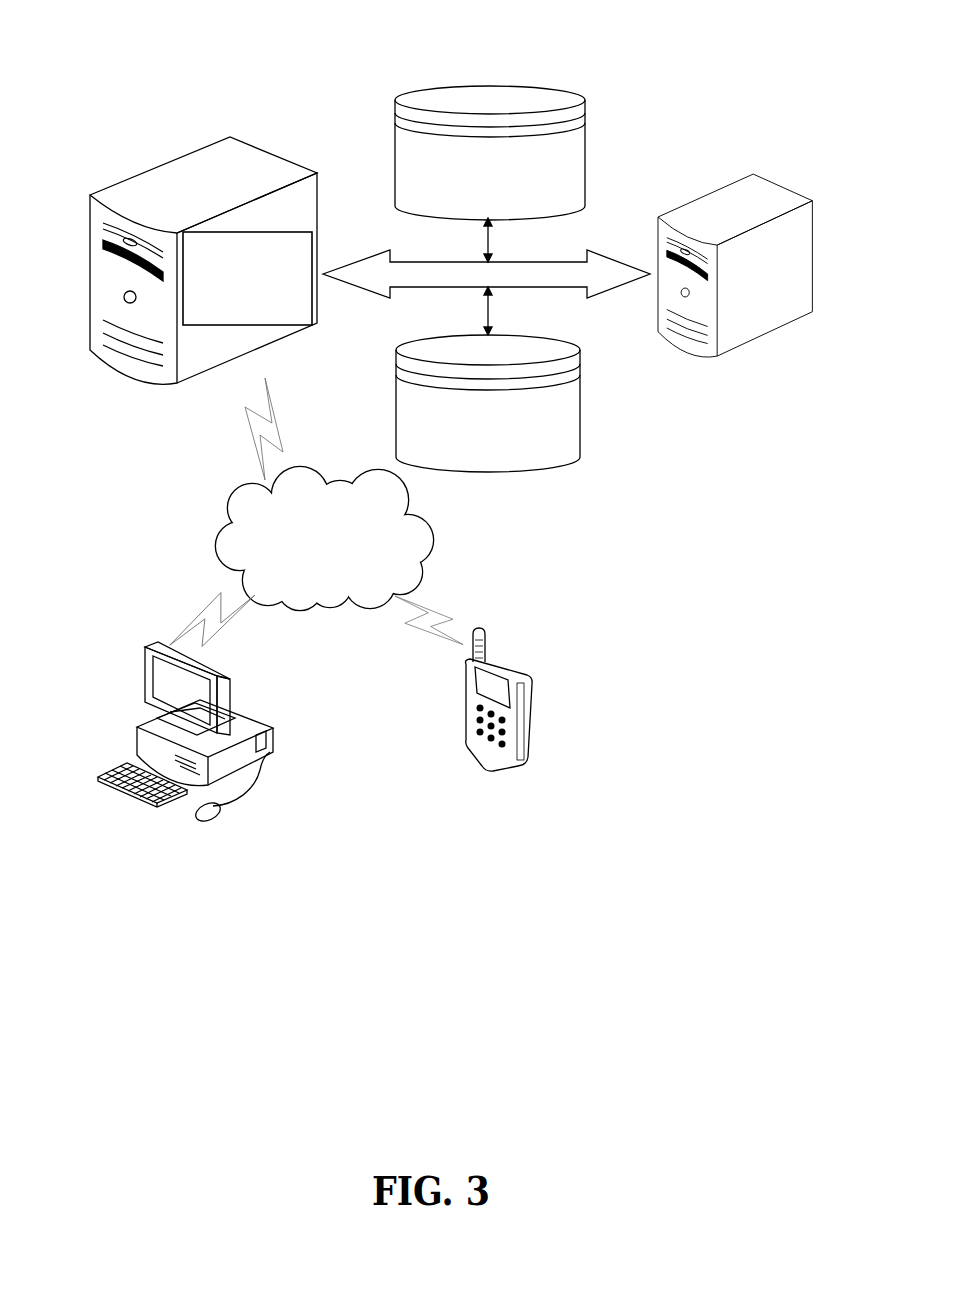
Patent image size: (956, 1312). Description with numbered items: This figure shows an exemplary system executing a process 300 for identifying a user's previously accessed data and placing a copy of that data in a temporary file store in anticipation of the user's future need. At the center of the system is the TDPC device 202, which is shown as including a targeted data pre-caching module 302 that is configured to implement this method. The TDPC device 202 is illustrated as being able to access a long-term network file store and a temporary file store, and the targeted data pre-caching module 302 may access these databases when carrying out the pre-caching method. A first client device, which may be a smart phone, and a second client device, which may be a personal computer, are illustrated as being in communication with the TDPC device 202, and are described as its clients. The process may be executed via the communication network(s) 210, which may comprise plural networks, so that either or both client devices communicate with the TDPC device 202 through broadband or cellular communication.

The process 300 is at (156, 90).
The TDPC device 202 is at (140, 195).
The targeted data pre-caching module 302 is at (247, 278).
The communication network(s) 210 is at (405, 439).